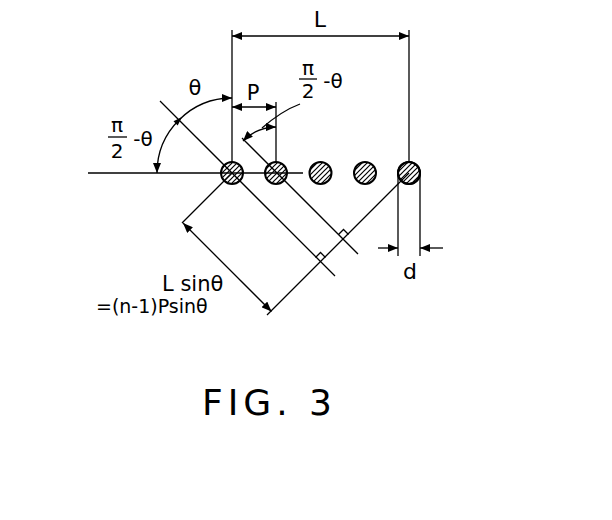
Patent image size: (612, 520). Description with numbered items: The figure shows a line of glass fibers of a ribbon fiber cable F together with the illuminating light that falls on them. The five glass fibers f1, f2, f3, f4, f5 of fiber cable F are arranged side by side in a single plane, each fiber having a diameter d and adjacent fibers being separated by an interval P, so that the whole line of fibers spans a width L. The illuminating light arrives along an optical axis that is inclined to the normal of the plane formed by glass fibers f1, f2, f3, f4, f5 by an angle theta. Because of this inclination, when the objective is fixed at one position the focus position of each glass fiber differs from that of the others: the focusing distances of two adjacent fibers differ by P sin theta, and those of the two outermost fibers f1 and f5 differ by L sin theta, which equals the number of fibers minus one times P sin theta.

The glass fiber f1 is at (232, 184).
The glass fiber f2 is at (285, 165).
The glass fiber f3 is at (329, 165).
The glass fiber f4 is at (372, 165).
The glass fiber f5 is at (416, 164).
The fiber cable F is at (433, 177).